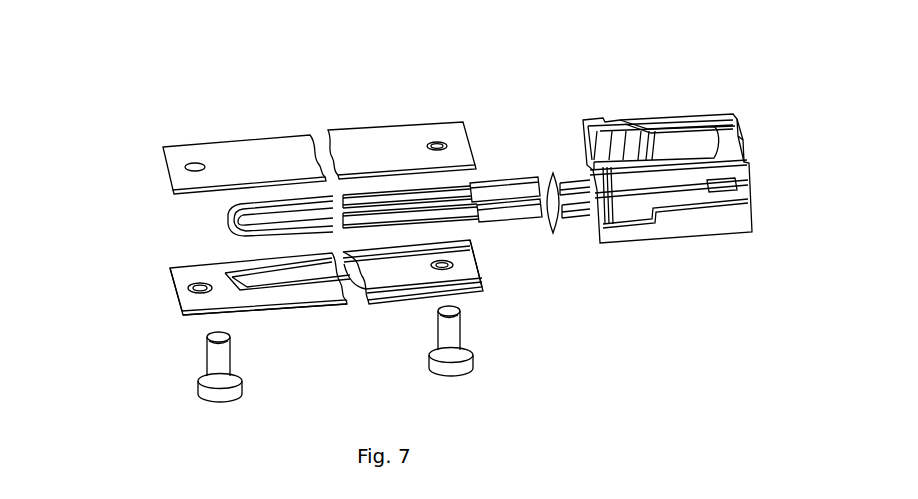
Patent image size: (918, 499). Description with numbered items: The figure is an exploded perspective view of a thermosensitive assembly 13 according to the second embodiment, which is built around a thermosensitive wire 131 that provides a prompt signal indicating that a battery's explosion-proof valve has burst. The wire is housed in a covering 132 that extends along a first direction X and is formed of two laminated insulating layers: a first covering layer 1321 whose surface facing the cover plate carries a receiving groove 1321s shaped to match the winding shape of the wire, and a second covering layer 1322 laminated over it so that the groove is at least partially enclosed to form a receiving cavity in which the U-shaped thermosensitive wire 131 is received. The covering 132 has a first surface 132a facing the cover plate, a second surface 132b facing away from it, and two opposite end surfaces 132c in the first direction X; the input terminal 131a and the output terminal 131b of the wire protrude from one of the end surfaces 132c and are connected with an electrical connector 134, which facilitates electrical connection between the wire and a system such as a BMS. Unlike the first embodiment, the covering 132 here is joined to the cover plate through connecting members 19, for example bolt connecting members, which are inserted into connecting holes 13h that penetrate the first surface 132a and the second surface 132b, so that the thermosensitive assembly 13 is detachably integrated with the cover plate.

The thermosensitive assembly 13 is at (657, 420).
The connecting hole 13h is at (194, 283).
The connecting member 19 is at (214, 363).
The thermosensitive wire 131 is at (233, 215).
The input terminal 131a is at (577, 178).
The output terminal 131b is at (497, 215).
The covering 132 is at (86, 150).
The first surface 132a is at (352, 158).
The second surface 132b is at (300, 312).
The end surfaces 132c is at (175, 291).
The electrical connector 134 is at (700, 225).
The first covering layer 1321 is at (175, 268).
The receiving groove 1321s is at (312, 291).
The second covering layer 1322 is at (170, 162).
The first direction X is at (663, 34).